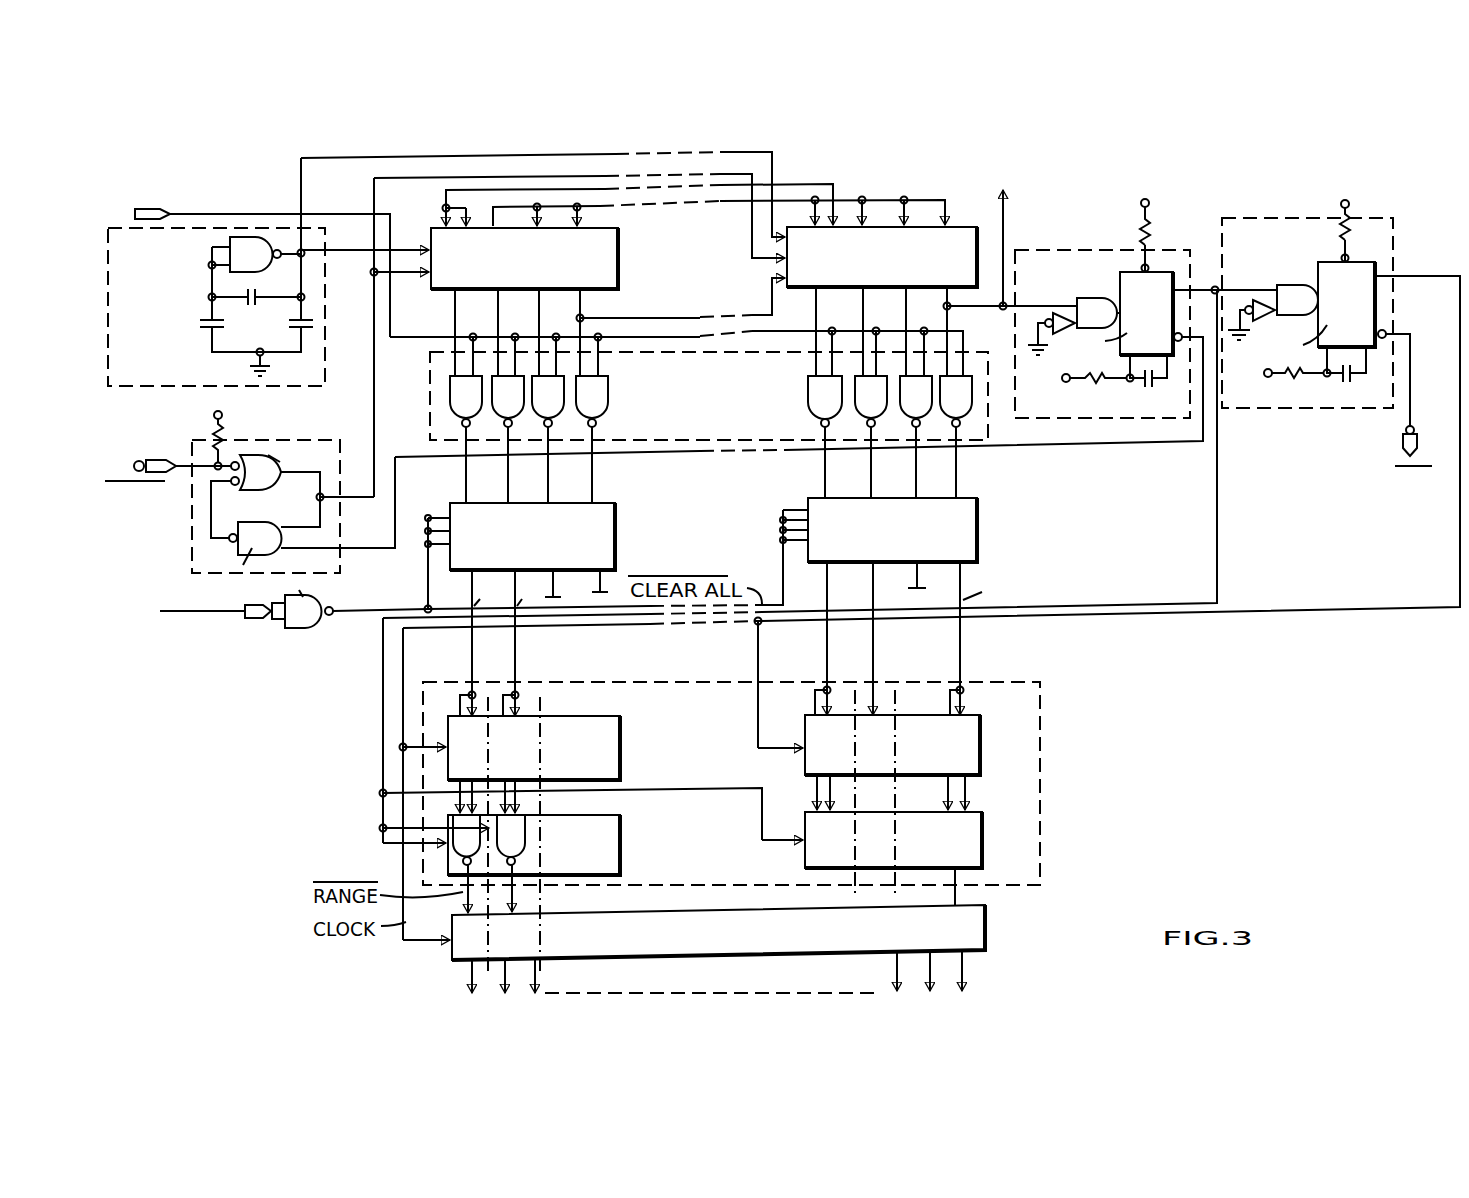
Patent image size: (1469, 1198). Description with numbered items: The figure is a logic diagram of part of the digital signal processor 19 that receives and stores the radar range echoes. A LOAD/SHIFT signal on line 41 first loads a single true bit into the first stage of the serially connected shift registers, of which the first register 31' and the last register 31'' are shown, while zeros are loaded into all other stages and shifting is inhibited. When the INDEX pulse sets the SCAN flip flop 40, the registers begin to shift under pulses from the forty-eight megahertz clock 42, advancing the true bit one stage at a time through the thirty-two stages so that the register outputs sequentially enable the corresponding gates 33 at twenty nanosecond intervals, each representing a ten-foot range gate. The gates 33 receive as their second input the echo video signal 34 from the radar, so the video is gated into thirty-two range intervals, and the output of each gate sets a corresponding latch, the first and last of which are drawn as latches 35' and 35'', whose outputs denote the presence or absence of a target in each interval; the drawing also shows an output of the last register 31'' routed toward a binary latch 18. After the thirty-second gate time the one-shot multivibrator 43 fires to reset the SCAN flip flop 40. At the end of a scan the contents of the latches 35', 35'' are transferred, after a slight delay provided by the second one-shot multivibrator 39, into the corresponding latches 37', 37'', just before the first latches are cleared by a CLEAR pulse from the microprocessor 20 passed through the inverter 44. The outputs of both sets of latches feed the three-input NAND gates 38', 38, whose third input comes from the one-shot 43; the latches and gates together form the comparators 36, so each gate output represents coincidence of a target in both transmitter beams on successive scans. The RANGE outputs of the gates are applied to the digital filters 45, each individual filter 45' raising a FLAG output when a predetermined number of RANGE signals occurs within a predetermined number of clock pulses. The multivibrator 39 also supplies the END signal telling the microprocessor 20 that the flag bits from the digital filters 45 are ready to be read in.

The binary latch 18 is at (984, 231).
The digital signal processor 19 is at (1190, 874).
The microprocessor 20 is at (719, 1033).
The first shift register 31' is at (511, 273).
The last bit shift register 31'' is at (887, 239).
The gates 33 is at (430, 407).
The echo video signal 34 is at (266, 213).
The first latch 35' is at (546, 556).
The last latch 35'' is at (905, 549).
The comparators 36 is at (1042, 716).
The first 7475 latch 37' is at (559, 764).
The last 7475 latch 37'' is at (917, 762).
The first NAND gate 38' is at (558, 858).
The NAND gates 38 is at (913, 850).
The second one-shot multivibrator 39 is at (1237, 215).
The SCAN flip flop 40 is at (240, 446).
The LOAD/SHIFT signal line 41 is at (372, 404).
The 48 MHz clock 42 is at (163, 386).
The one-shot multivibrator 43 is at (1062, 250).
The inverter 44 is at (328, 605).
The digital filters 45 is at (742, 965).
The digital filter 45' is at (466, 973).